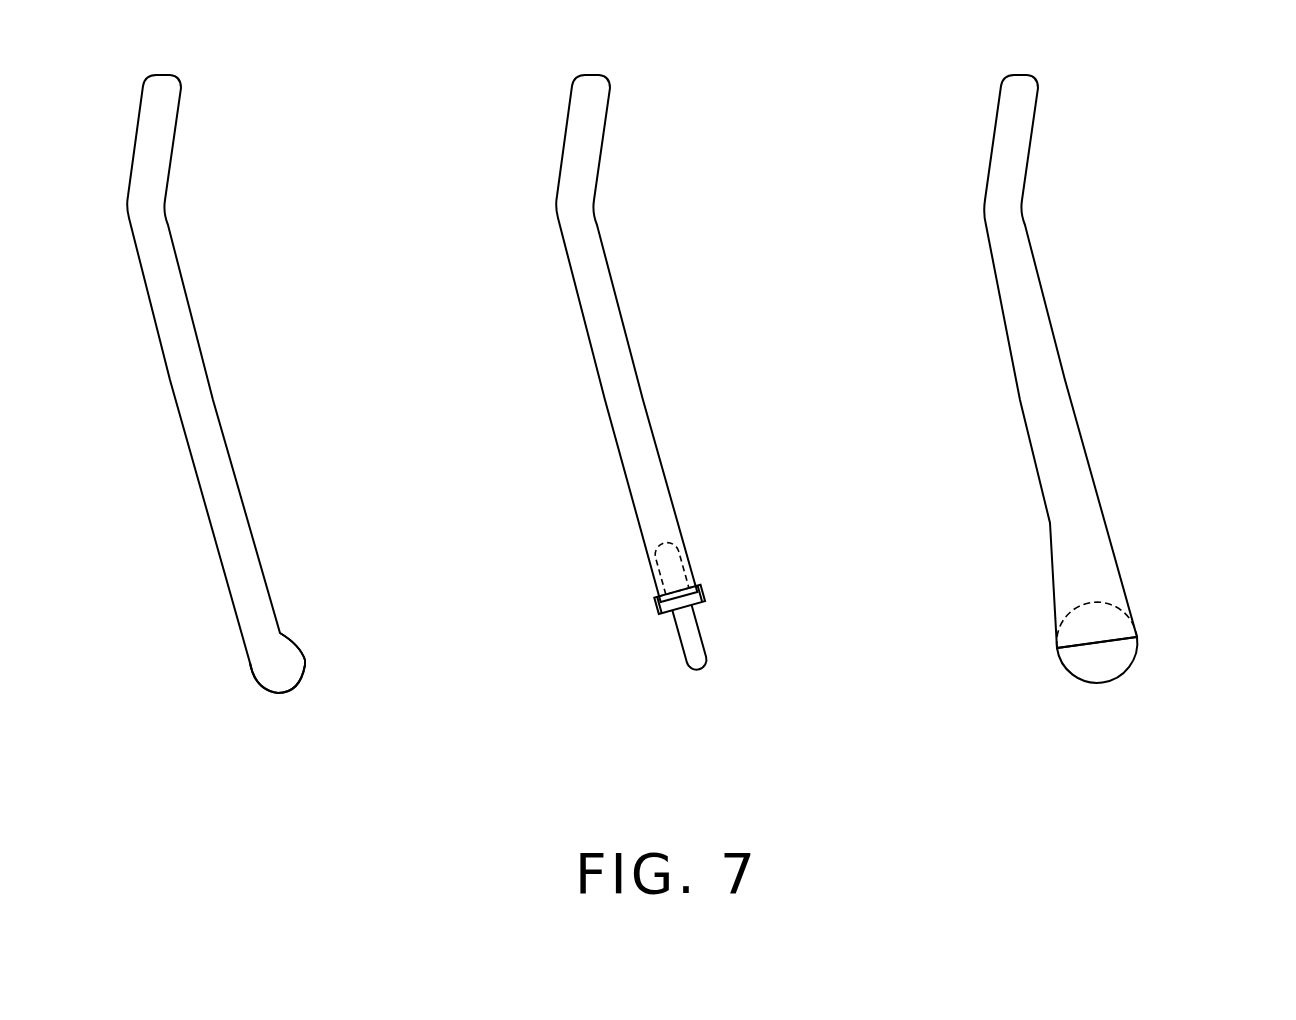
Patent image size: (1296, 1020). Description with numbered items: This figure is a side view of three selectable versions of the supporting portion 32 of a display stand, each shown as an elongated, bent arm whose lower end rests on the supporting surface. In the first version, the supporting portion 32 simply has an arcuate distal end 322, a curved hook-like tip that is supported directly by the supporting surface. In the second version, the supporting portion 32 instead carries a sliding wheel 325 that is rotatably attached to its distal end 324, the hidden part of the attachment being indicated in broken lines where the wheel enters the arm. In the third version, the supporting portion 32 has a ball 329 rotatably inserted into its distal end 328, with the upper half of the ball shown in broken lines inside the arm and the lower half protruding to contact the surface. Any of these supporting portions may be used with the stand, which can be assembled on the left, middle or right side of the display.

The supporting portion 32 is at (202, 437).
The arcuate distal end 322 is at (280, 668).
The distal end 324 is at (686, 567).
The sliding wheel 325 is at (688, 633).
The distal end 328 is at (1100, 627).
The ball 329 is at (1100, 660).